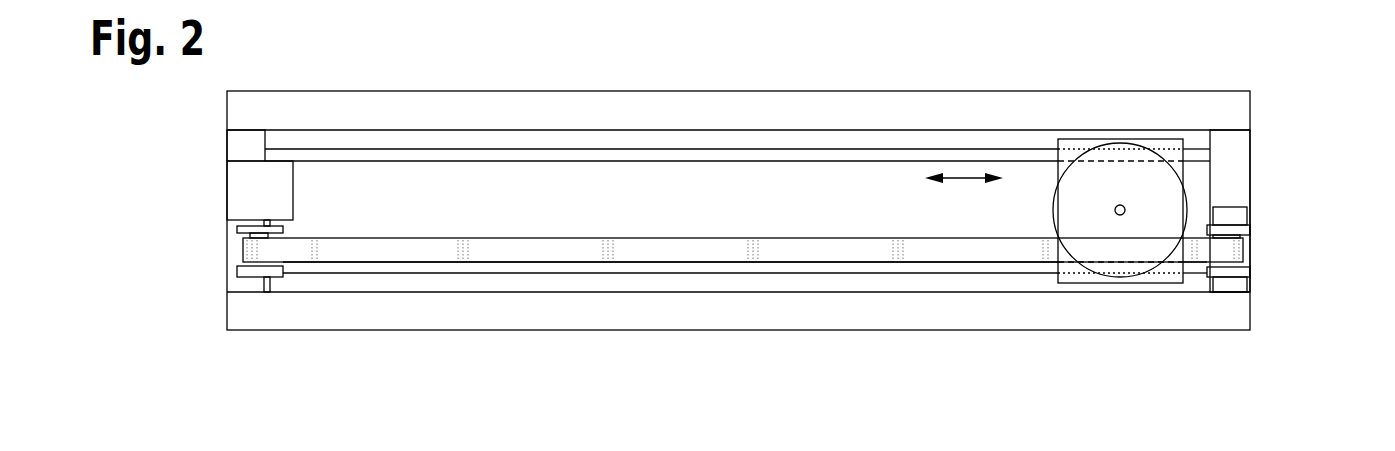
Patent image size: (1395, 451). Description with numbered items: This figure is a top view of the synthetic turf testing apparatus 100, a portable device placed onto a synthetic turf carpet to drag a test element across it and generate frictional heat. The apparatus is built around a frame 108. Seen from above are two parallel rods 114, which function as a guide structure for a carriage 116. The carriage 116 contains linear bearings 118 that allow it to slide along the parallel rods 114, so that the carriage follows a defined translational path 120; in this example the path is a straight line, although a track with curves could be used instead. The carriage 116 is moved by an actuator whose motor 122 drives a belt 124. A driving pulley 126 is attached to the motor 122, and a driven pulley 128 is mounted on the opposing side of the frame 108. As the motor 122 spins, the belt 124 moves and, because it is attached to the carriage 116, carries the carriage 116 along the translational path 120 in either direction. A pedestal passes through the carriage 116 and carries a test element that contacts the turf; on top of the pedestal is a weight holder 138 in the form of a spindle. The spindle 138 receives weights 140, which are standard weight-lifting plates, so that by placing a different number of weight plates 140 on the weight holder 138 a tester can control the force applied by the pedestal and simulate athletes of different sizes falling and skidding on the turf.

The synthetic turf testing apparatus 100 is at (1272, 94).
The frame 108 is at (711, 101).
The parallel rods 114 is at (392, 160).
The carriage 116 is at (1079, 140).
The linear bearings 118 is at (1162, 156).
The translational path 120 is at (965, 180).
The motor 122 is at (235, 197).
The belt 124 is at (550, 252).
The driving pulley 126 is at (240, 271).
The driven pulley 128 is at (1250, 272).
The weight holder 138 is at (1115, 210).
The weights 140 is at (1107, 243).